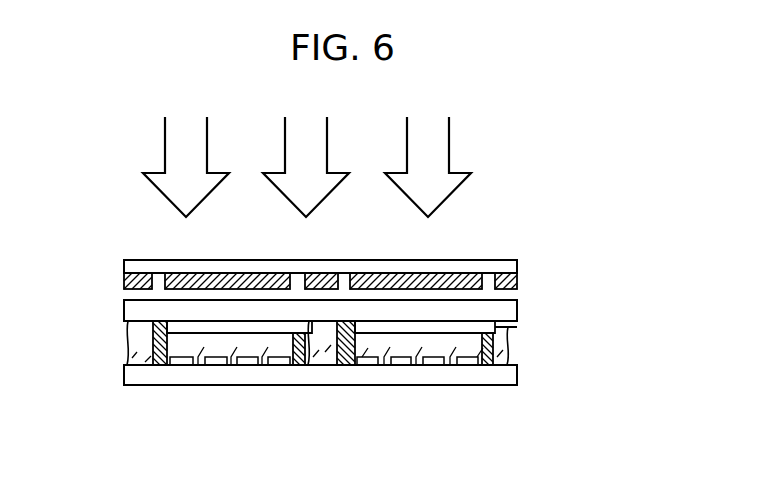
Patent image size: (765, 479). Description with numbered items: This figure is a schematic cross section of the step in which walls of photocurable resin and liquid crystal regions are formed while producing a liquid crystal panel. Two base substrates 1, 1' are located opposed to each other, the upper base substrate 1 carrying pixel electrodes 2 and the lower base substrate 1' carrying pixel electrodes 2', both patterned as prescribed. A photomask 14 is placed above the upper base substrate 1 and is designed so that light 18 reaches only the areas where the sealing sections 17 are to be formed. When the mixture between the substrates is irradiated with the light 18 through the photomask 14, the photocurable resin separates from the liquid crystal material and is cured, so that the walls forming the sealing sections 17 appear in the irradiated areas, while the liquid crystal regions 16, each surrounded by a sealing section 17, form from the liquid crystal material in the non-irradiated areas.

The light 18 is at (440, 152).
The photomask 14 is at (510, 264).
The base substrate 1 is at (354, 296).
The pixel electrodes 2 is at (379, 318).
The liquid crystal region 16 is at (510, 347).
The sealing section 17 is at (505, 365).
The base substrate 1' is at (357, 392).
The pixel electrodes 2' is at (326, 407).